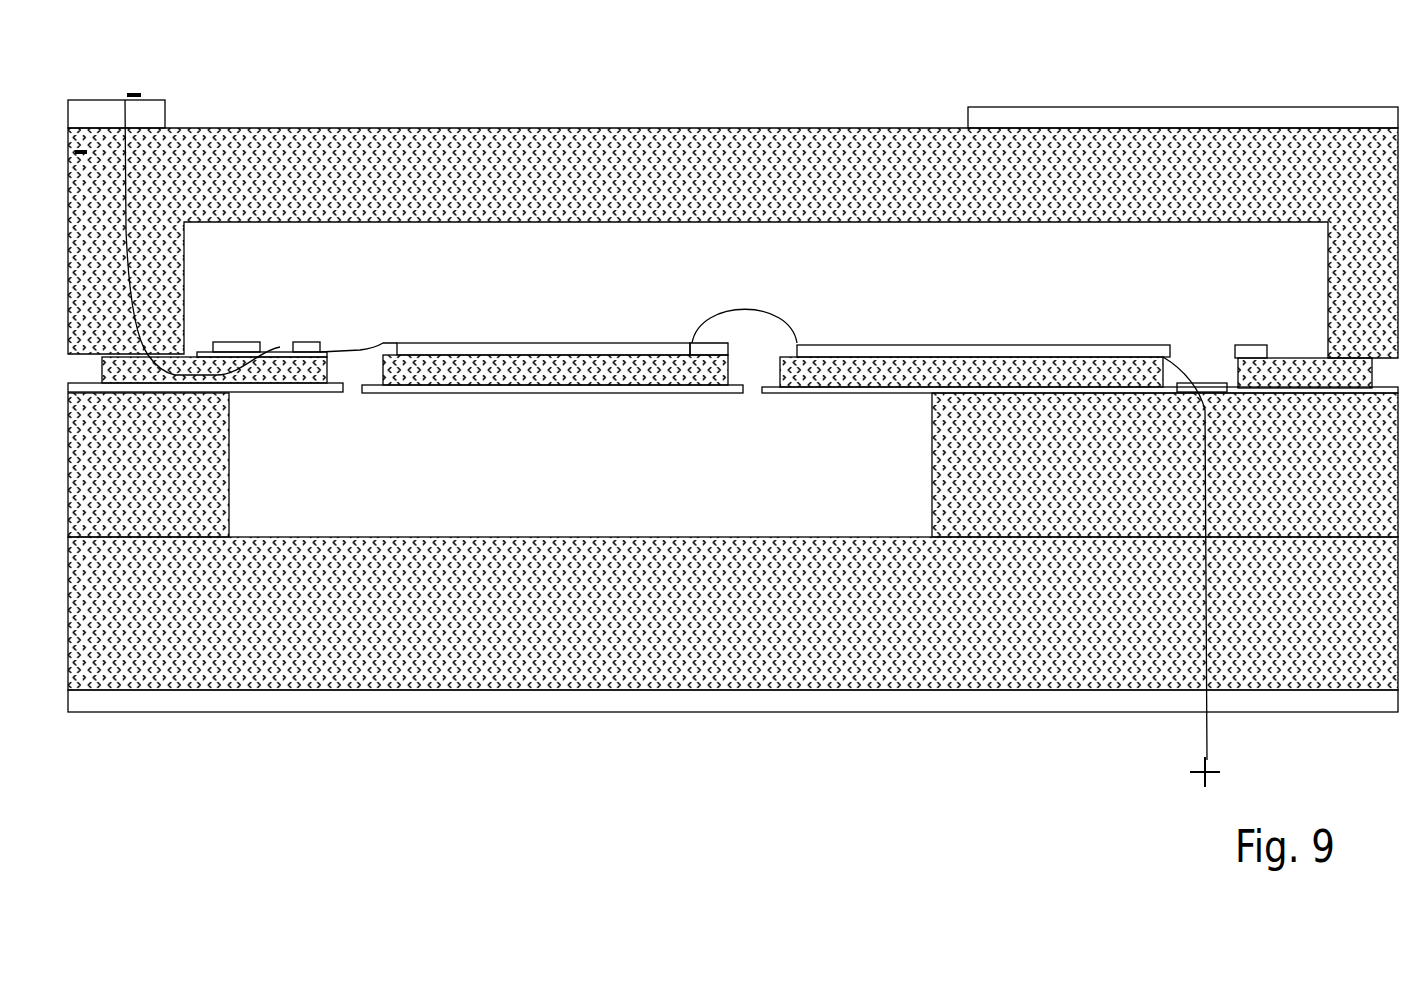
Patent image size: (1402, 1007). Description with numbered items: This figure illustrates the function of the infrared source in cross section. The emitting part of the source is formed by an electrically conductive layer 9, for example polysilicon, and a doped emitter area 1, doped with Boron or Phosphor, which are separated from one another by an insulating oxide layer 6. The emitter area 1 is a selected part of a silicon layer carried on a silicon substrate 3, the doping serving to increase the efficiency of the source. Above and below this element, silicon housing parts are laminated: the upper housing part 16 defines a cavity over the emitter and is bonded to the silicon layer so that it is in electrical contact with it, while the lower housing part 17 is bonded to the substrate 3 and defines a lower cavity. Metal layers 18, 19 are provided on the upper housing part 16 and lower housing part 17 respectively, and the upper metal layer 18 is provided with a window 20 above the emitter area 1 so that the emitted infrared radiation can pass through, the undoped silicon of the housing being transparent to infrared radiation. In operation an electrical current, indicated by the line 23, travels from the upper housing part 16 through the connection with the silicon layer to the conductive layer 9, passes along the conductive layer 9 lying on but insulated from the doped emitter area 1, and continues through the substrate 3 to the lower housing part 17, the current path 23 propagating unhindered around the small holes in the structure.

The emitter area 1 is at (512, 373).
The silicon substrate 3 is at (958, 415).
The oxide layer 6 is at (702, 366).
The electrically conductive layer 9 is at (591, 336).
The upper housing part 16 is at (455, 222).
The lower housing part 17 is at (668, 557).
The metal layer 18 is at (160, 110).
The metal layer 19 is at (800, 706).
The window 20 is at (516, 93).
The electrical current path 23 is at (790, 315).